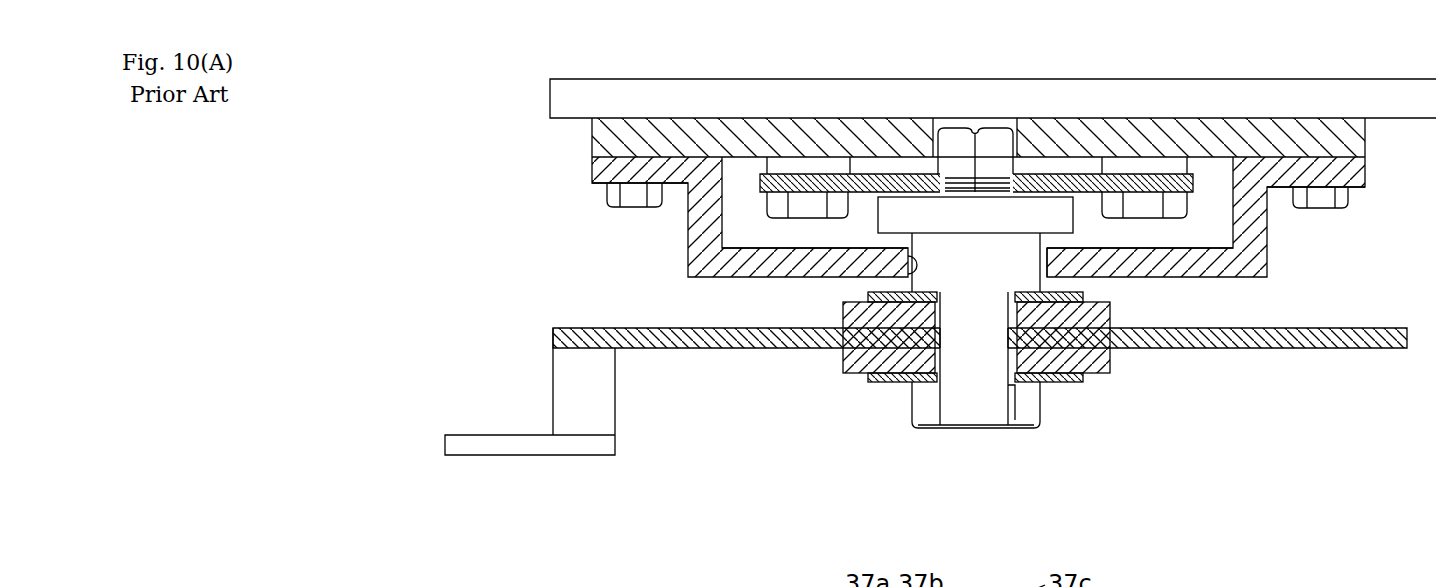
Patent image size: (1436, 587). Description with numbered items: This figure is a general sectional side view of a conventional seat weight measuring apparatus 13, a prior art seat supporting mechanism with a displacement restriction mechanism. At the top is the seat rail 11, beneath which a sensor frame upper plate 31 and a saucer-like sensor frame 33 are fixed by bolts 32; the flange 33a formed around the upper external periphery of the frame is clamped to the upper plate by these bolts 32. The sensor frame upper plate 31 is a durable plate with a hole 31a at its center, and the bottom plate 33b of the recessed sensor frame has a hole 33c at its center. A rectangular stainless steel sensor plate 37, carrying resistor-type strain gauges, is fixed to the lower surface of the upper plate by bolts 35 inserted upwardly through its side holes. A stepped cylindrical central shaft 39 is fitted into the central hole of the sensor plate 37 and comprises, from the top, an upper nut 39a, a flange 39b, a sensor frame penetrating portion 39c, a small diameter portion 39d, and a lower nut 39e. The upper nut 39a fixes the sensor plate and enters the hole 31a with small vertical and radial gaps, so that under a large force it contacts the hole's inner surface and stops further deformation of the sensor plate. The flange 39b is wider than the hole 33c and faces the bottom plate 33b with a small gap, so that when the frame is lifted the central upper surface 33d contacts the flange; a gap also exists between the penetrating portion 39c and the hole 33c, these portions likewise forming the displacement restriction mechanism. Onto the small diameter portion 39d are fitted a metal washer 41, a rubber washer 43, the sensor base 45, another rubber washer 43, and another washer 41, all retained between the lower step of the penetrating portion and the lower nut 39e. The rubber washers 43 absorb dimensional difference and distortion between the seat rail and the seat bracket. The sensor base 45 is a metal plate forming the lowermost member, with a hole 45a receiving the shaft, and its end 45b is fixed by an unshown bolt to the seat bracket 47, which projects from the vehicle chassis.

The seat rail 11 is at (617, 92).
The mounting structure 13 is at (546, 130).
The sensor frame upper plate 31 is at (612, 137).
The hole 31a is at (966, 131).
The bolts 32 is at (633, 203).
The sensor frame 33 is at (683, 222).
The flange 33a is at (603, 170).
The bottom plate 33b is at (690, 279).
The hole 33c is at (907, 278).
The central upper surface 33d is at (1060, 241).
The bolts 35 is at (745, 249).
The sensor plate 37 is at (798, 209).
The central shaft 39 is at (868, 379).
The upper nut 39a is at (994, 140).
The flange 39b is at (1045, 213).
The sensor frame penetrating portion 39c is at (1015, 386).
The small diameter portion 39d is at (962, 349).
The lower nut 39e is at (930, 409).
The washer 41 is at (1055, 384).
The rubber washer 43 is at (1100, 331).
The sensor base 45 is at (1180, 347).
The hole of support plate 45a is at (1013, 341).
The end 45b is at (573, 327).
The seat bracket 47 is at (567, 387).